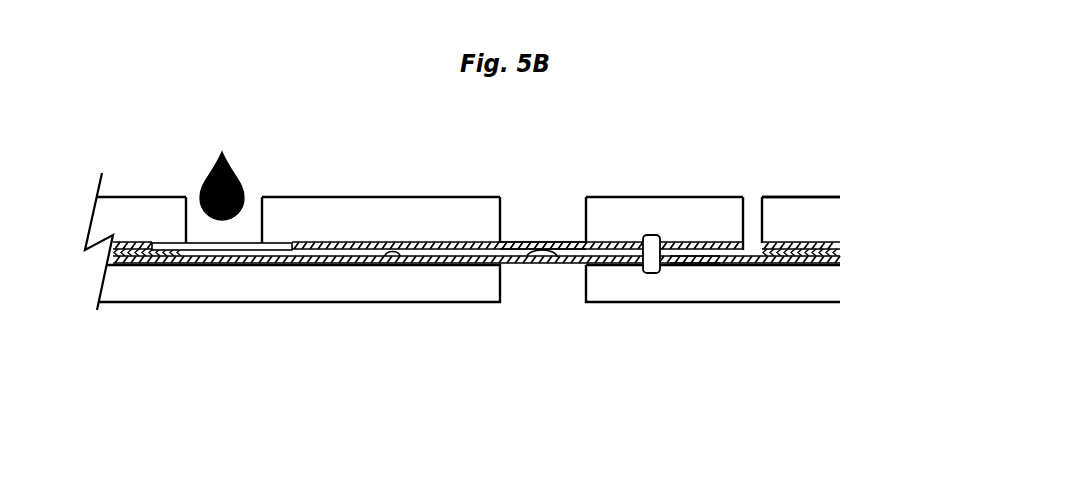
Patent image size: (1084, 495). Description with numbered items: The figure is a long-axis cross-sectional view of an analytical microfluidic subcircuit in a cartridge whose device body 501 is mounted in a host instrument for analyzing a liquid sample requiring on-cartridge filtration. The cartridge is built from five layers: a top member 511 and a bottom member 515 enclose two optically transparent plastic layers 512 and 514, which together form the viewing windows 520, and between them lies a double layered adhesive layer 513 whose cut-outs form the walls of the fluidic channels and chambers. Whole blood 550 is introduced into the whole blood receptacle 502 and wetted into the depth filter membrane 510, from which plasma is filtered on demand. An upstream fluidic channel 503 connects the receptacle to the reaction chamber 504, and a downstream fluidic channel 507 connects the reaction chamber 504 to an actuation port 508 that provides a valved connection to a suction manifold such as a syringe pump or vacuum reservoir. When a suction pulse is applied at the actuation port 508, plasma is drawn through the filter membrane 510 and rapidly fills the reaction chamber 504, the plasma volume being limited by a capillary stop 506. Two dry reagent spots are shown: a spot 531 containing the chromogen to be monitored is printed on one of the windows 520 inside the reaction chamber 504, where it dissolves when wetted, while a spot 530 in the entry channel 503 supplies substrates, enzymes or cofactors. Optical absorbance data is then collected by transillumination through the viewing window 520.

The device body 501 is at (487, 433).
The whole blood receptacle 502 is at (183, 211).
The upstream fluidic channel 503 is at (428, 240).
The reaction chamber 504 is at (555, 200).
The capillary stop 506 is at (650, 234).
The downstream fluidic channel 507 is at (695, 267).
The actuation port 508 is at (753, 195).
The membrane 510 is at (240, 243).
The top member 511 is at (840, 215).
The layer 512 is at (847, 243).
The double layered adhesive layer 513 is at (848, 253).
The layer 514 is at (848, 264).
The bottom member 515 is at (840, 285).
The viewing window 520 is at (530, 258).
The reagent spot 530 is at (392, 264).
The chromogen spot 531 is at (540, 243).
The blood 550 is at (213, 172).